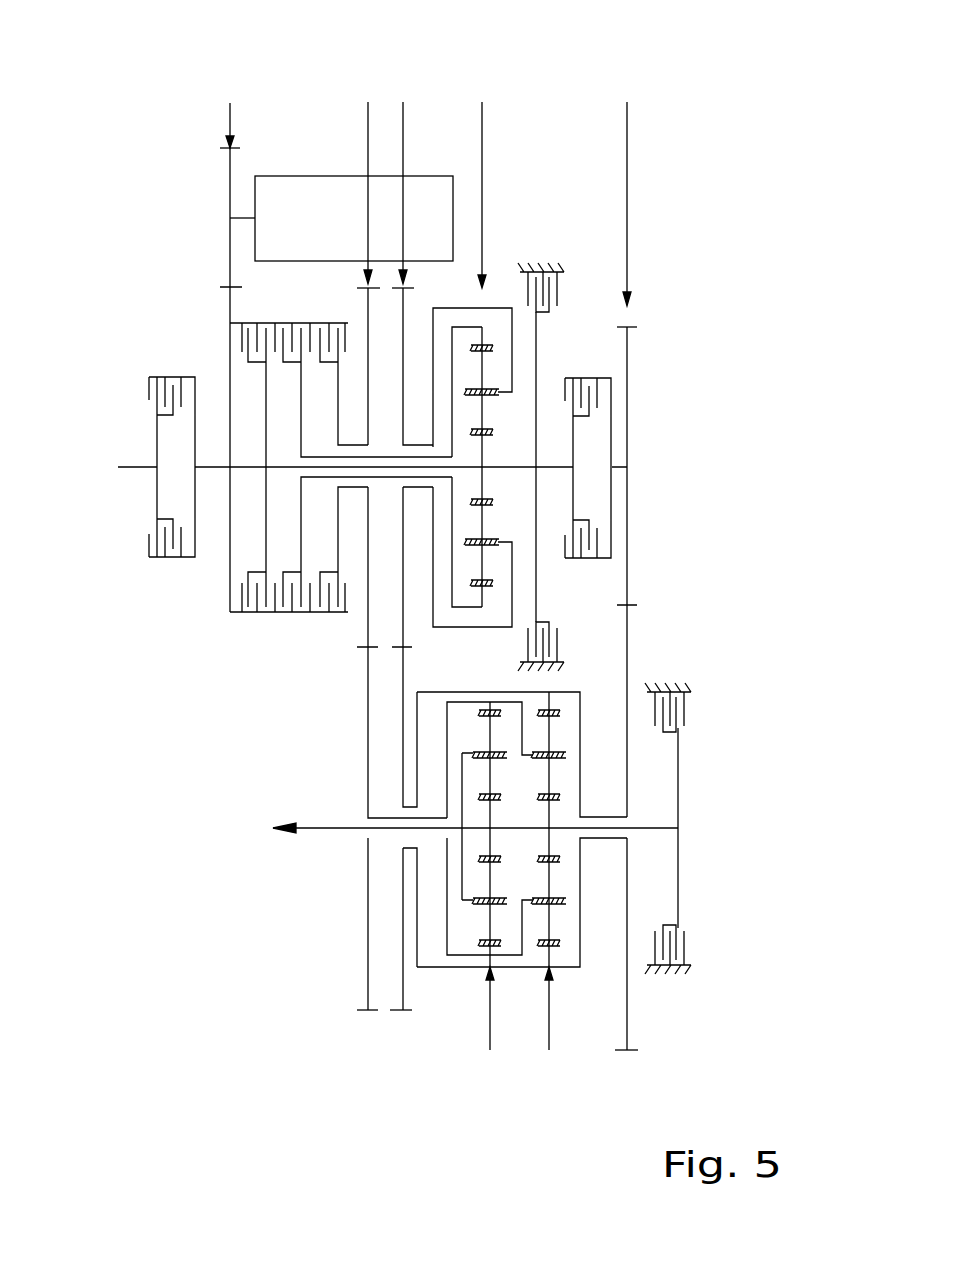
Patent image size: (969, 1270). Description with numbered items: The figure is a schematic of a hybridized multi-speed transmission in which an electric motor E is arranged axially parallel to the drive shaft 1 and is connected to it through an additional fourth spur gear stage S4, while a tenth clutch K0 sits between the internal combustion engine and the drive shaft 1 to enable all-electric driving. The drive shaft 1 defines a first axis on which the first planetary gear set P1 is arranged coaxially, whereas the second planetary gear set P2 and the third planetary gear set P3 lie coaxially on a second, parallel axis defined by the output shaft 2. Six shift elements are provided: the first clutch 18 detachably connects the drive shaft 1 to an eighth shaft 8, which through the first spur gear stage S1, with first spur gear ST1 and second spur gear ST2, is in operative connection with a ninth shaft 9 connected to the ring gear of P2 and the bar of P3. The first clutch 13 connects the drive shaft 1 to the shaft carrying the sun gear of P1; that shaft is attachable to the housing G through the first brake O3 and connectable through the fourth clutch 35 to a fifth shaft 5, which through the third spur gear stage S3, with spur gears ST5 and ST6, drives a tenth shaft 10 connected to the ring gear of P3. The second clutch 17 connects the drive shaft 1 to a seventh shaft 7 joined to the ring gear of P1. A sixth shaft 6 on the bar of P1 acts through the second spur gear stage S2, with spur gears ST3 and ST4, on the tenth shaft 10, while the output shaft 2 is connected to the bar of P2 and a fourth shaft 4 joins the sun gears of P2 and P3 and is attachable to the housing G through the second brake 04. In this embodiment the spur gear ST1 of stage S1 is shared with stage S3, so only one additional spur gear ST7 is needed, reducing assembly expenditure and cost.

The drive shaft 1 is at (210, 468).
The output shaft 2 is at (323, 832).
The fourth shaft 4 is at (665, 826).
The fifth shaft 5 is at (618, 465).
The sixth shaft 6 is at (513, 563).
The seventh shaft 7 is at (455, 325).
The eighth shaft 8 is at (365, 618).
The ninth shaft 9 is at (365, 733).
The tenth shaft 10 is at (540, 690).
The first clutch 13 is at (242, 347).
The second clutch 17 is at (277, 320).
The first clutch 18 is at (323, 321).
The fourth clutch 35 is at (595, 408).
The electric motor E is at (275, 205).
The tenth clutch K0 is at (152, 397).
The housing G is at (532, 265).
The first brake O3 is at (562, 293).
The second brake 04 is at (688, 712).
The first planetary gear set P1 is at (472, 325).
The second planetary gear set P2 is at (490, 897).
The third planetary gear set P3 is at (548, 892).
The first spur gear stage S1 is at (367, 255).
The second spur gear stage S2 is at (411, 255).
The third spur gear stage S3 is at (627, 557).
The fourth spur gear stage S4 is at (230, 338).
The first spur gear ST1 is at (363, 285).
The second spur gear ST2 is at (360, 1012).
The first spur gear ST3 is at (395, 283).
The second spur gear ST4 is at (407, 1013).
The first spur gear ST5 is at (632, 325).
The second spur gear ST6 is at (635, 1055).
The additional spur gear ST7 is at (222, 150).